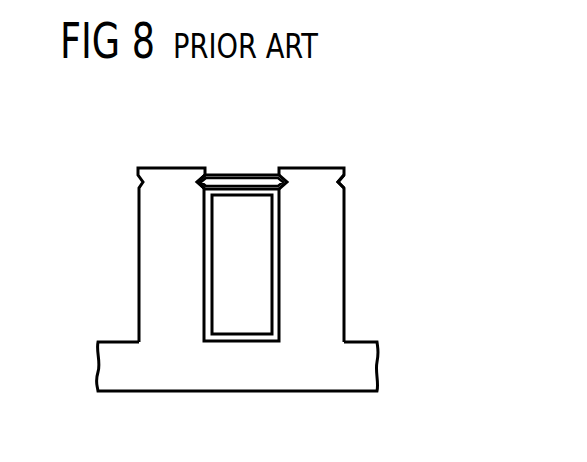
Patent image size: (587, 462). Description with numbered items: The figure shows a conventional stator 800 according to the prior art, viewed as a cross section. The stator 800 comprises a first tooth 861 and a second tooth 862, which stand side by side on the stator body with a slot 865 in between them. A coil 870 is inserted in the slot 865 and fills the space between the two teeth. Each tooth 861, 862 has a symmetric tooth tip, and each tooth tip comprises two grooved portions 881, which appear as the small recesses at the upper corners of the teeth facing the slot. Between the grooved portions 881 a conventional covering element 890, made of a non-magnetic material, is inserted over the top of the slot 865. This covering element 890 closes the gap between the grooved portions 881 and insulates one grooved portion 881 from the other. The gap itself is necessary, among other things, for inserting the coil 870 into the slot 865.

The stator 800 is at (333, 375).
The first tooth 861 is at (152, 247).
The second tooth 862 is at (337, 233).
The slot 865 is at (208, 310).
The coil 870 is at (255, 311).
The grooved portions 881 is at (176, 182).
The covering element 890 is at (241, 182).